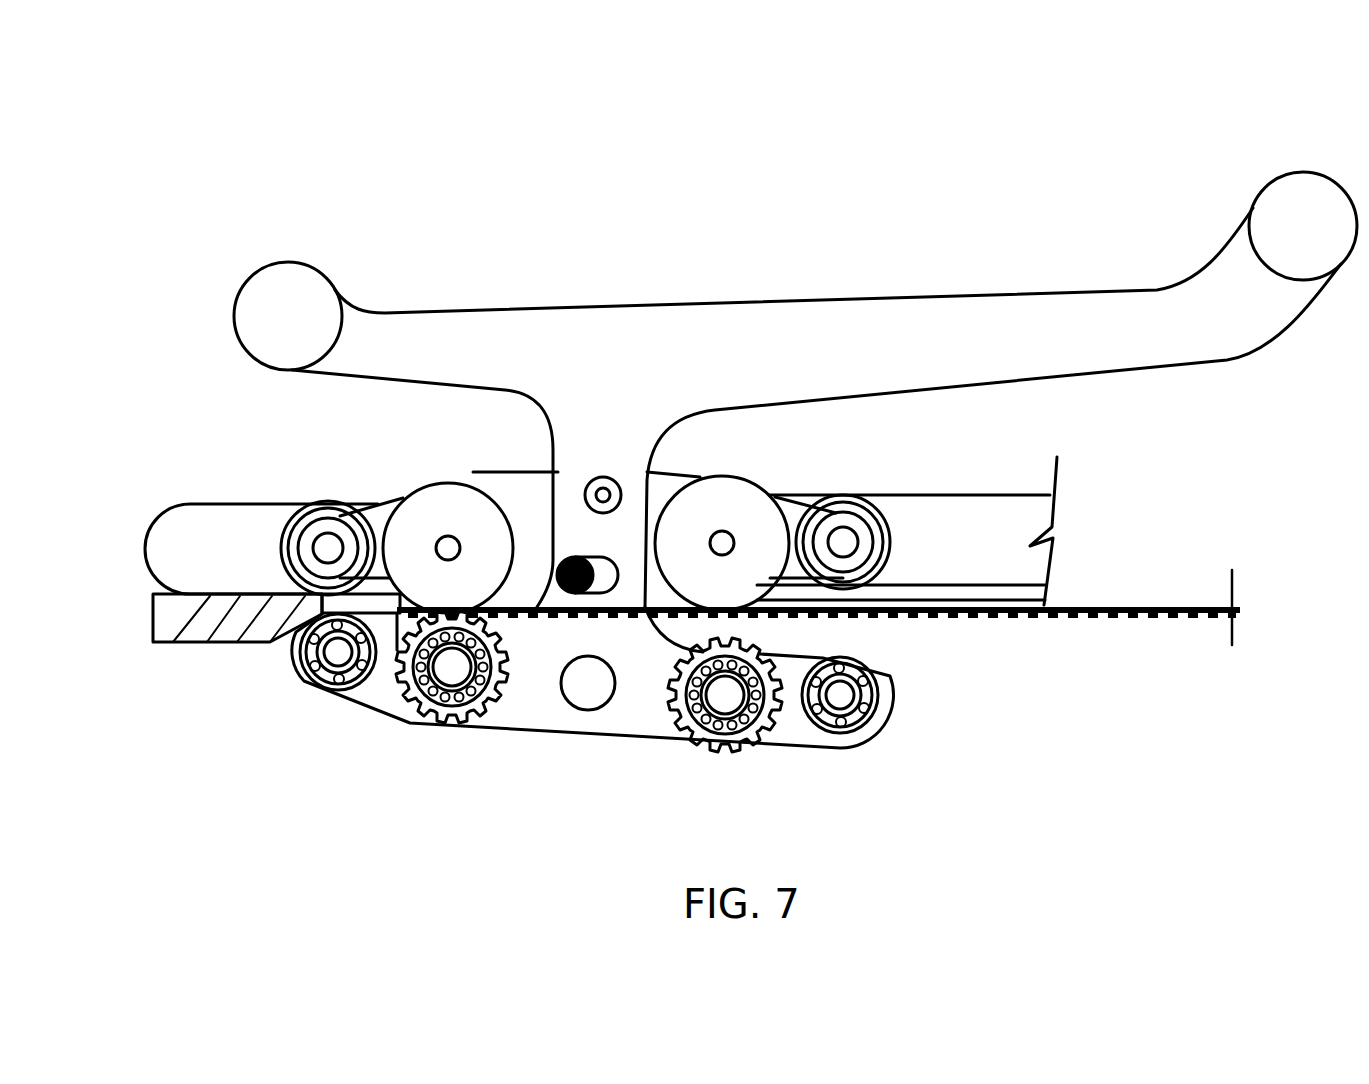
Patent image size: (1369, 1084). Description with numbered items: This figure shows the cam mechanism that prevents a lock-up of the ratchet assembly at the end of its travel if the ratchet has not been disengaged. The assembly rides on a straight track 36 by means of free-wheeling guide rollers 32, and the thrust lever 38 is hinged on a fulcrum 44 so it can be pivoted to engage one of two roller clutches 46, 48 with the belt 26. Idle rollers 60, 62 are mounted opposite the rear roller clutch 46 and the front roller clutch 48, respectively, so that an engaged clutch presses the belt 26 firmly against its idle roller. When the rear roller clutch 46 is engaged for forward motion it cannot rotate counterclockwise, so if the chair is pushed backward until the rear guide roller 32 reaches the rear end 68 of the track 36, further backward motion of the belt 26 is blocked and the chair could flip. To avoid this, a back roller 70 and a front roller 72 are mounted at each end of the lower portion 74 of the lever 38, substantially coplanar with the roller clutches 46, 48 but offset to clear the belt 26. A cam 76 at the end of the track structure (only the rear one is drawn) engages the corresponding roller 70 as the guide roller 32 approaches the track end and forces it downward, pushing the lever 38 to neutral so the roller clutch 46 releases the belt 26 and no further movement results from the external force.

The belt 26 is at (1125, 606).
The guide rollers 32 is at (328, 513).
The track 36 is at (218, 527).
The thrust lever 38 is at (668, 325).
The fulcrum 44 is at (583, 676).
The rear roller clutch 46 is at (413, 707).
The front roller clutch 48 is at (757, 720).
The idle roller 60 is at (483, 513).
The idle roller 62 is at (733, 495).
The rear end of the travel track 68 is at (229, 514).
The back roller 70 is at (302, 680).
The front roller 72 is at (882, 702).
The lower portion of the lever 74 is at (518, 707).
The cam 76 is at (293, 640).